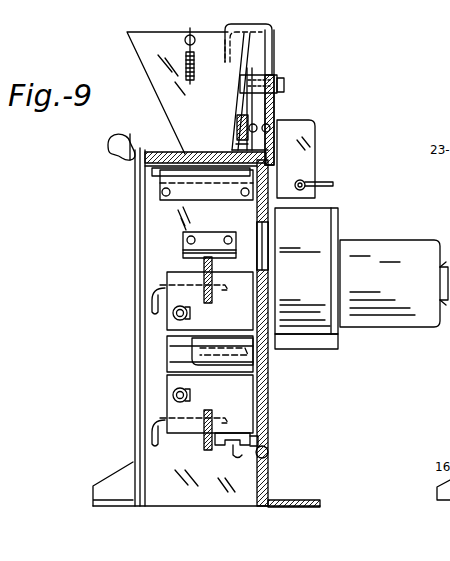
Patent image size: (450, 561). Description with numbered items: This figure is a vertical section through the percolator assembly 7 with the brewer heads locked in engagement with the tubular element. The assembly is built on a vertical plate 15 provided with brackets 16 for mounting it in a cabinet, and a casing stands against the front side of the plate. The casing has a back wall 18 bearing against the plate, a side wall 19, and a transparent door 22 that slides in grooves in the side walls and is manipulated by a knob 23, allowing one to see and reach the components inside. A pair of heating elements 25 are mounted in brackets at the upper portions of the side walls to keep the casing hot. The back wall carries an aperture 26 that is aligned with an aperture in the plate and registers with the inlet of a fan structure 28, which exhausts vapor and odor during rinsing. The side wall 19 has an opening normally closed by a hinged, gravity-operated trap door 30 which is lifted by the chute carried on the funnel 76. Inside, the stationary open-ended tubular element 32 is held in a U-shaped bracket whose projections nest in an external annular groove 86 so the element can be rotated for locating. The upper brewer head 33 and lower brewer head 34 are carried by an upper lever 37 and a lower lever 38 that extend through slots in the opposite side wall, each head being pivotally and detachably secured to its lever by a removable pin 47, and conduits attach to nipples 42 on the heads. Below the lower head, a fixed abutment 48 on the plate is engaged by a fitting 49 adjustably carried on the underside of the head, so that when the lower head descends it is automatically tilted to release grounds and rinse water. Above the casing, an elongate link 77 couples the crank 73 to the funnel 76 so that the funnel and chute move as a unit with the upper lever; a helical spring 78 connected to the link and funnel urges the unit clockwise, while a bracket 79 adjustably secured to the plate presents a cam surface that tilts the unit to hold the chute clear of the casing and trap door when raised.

The percolator assembly 7 is at (200, 363).
The vertical plate 15 is at (272, 488).
The brackets 16 is at (118, 480).
The back wall 18 is at (258, 478).
The side wall 19 is at (150, 205).
The transparent door 22 is at (140, 420).
The knob 23 is at (108, 150).
The heating elements 25 is at (152, 172).
The aperture 26 is at (262, 275).
The fan structure 28 is at (305, 335).
The trap door 30 is at (183, 258).
The tubular element 32 is at (168, 362).
The upper brewer head 33 is at (165, 308).
The lower brewer head 34 is at (168, 378).
The upper lever 37 is at (225, 286).
The lower lever 38 is at (205, 446).
The nipples 42 is at (190, 313).
The removable pin 47 is at (150, 300).
The fixed abutment 48 is at (228, 365).
The fitting 49 is at (242, 448).
The crank 73 is at (238, 102).
The funnel 76 is at (130, 38).
The elongate link 77 is at (236, 118).
The helical spring 78 is at (195, 78).
The bracket 79 is at (267, 25).
The annular groove 86 is at (168, 350).